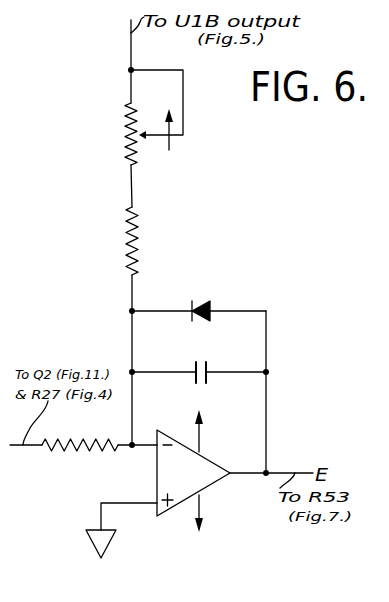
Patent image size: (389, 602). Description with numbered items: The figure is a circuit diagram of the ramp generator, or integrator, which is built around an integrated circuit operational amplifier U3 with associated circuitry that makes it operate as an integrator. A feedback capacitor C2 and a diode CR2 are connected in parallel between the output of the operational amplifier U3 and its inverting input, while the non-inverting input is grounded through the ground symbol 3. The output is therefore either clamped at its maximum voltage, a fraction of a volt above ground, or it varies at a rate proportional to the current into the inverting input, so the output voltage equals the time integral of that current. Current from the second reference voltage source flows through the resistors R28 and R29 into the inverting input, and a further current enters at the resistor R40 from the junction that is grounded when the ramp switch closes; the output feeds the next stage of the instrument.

The resistor R28 is at (152, 120).
The resistor R29 is at (111, 241).
The diode CR2 is at (199, 299).
The feedback capacitor C2 is at (199, 362).
The resistor R40 is at (80, 433).
The operational amplifier U3 is at (200, 473).
The ground 3 is at (121, 530).